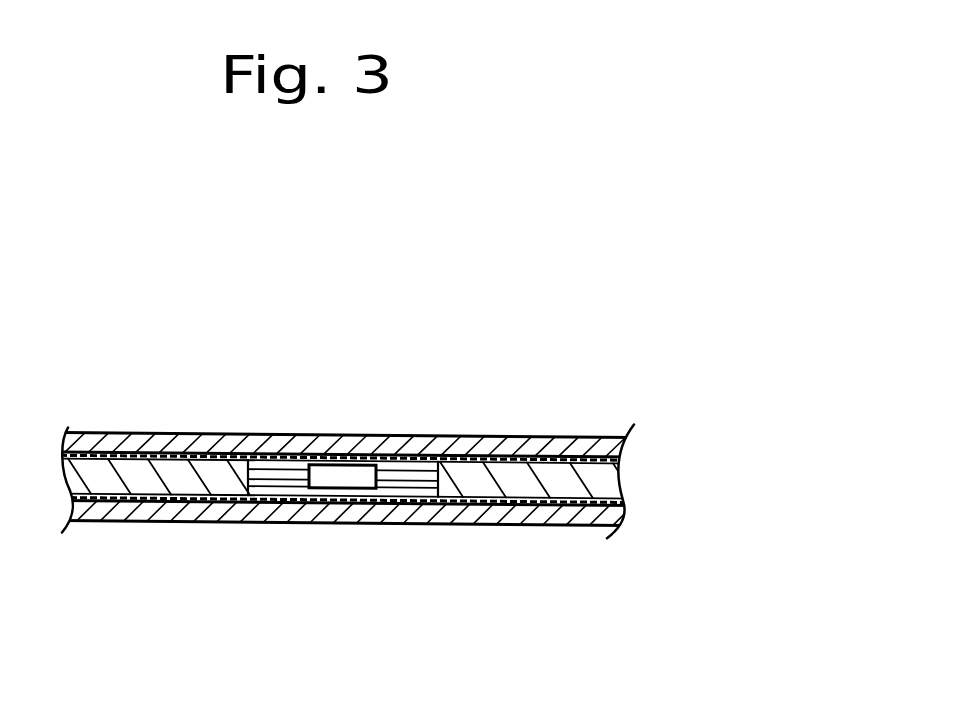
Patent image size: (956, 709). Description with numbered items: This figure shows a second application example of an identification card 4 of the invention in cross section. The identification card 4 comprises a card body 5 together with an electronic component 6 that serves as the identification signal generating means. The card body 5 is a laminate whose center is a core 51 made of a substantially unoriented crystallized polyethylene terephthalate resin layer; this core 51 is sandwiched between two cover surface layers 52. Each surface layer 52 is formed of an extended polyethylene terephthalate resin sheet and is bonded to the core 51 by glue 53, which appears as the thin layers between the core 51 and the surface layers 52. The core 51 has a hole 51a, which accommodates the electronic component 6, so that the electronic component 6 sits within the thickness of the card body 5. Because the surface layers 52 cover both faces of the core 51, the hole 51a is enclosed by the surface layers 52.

The identification card 4 is at (515, 438).
The card body 5 is at (197, 441).
The core 51 is at (225, 487).
The hole 51a is at (277, 463).
The surface layer 52 is at (135, 435).
The glue 53 is at (93, 435).
The electronic component 6 is at (345, 475).